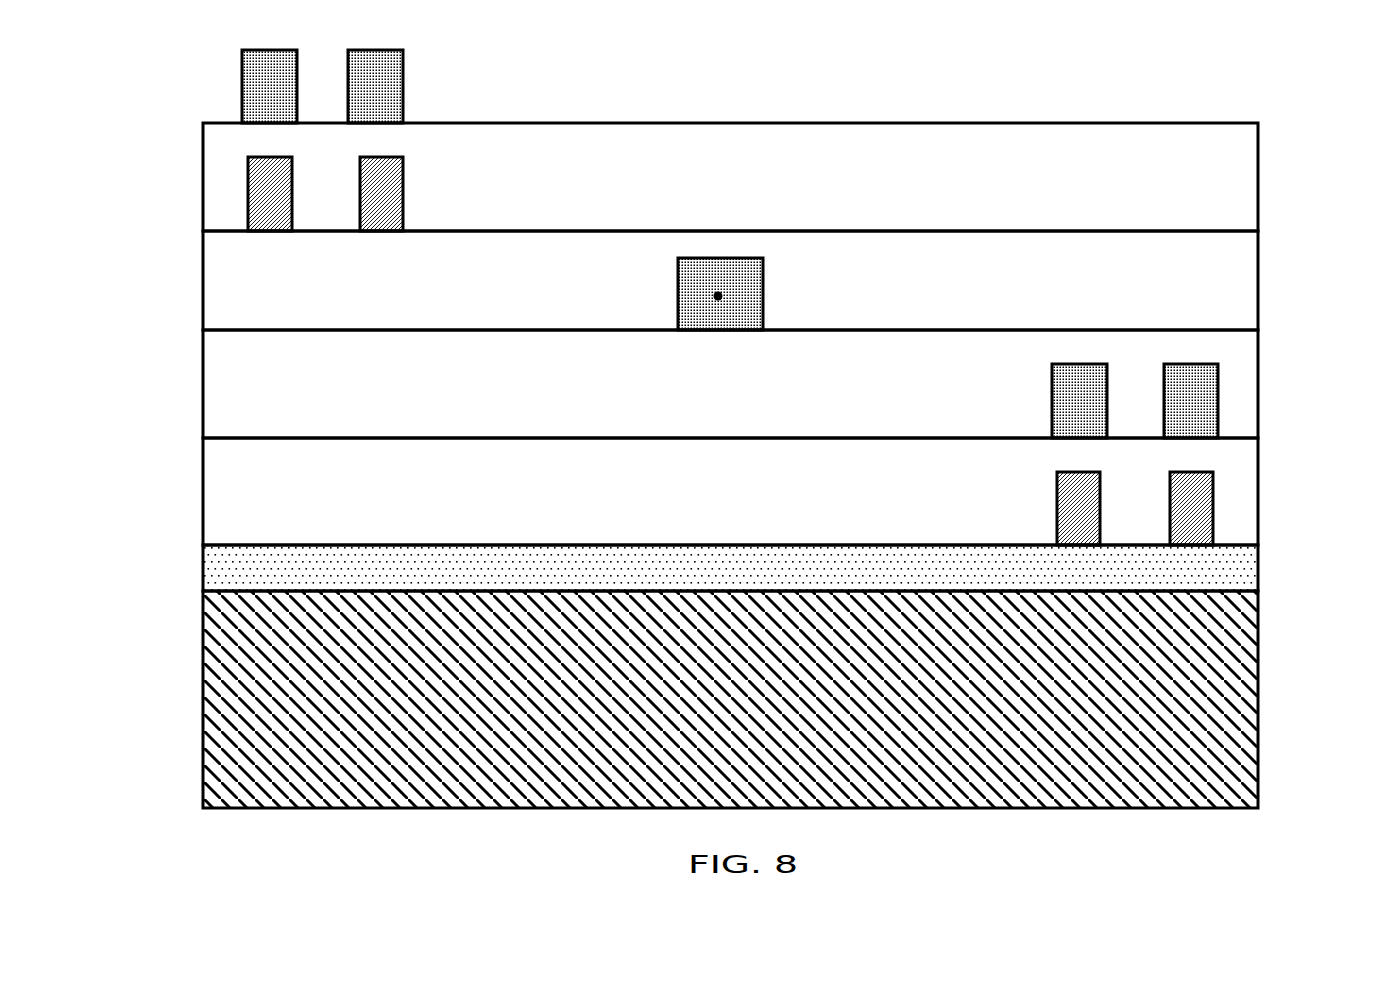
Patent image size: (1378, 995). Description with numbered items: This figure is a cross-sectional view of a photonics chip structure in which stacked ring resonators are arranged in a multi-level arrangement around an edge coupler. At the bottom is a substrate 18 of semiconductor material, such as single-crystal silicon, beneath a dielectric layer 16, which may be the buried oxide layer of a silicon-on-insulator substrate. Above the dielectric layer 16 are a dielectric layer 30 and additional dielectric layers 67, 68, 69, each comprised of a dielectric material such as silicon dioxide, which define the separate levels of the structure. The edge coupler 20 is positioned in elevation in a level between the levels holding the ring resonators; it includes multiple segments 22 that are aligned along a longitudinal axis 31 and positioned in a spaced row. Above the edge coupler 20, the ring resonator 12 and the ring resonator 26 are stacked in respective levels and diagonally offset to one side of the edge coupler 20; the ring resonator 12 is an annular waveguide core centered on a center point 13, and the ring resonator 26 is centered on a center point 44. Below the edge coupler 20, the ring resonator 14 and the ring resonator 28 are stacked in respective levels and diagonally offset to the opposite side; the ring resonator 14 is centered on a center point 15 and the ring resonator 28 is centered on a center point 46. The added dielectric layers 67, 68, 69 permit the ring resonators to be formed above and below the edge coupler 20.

The ring resonator 12 is at (392, 192).
The center point 13 is at (323, 192).
The ring resonator 14 is at (1190, 510).
The center point 15 is at (1134, 512).
The dielectric layer 16 is at (268, 570).
The substrate 18 is at (267, 674).
The edge coupler 20 is at (645, 267).
The segments 22 is at (737, 282).
The ring resonator 26 is at (385, 85).
The ring resonator 28 is at (1190, 400).
The dielectric layer 30 is at (257, 475).
The longitudinal axis 31 is at (718, 296).
The center point 44 is at (323, 88).
The center point 46 is at (1134, 403).
The dielectric layer 67 is at (252, 385).
The dielectric layer 68 is at (1223, 290).
The dielectric layer 69 is at (1217, 187).